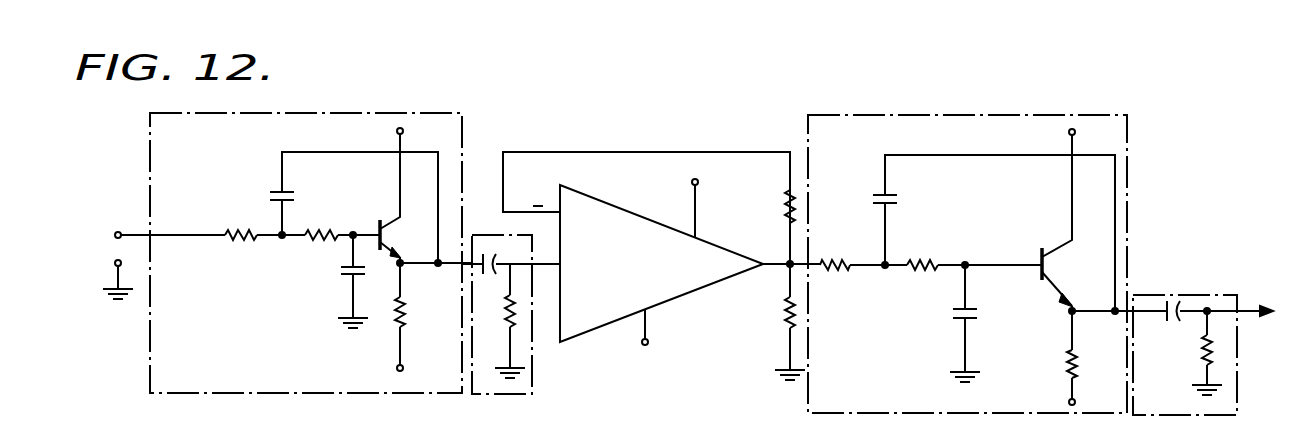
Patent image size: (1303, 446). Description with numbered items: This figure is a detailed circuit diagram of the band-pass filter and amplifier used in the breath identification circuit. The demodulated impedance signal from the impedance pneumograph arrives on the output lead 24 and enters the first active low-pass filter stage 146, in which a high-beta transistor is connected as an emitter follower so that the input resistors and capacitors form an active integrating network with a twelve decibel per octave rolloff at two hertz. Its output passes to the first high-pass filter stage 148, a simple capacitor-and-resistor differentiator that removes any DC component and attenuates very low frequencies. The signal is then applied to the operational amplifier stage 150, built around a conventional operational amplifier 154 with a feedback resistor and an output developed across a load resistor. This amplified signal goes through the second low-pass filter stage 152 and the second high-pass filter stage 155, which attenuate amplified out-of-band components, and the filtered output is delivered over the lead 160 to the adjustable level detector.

The output lead 24 is at (130, 235).
The first active low-pass filter stage 146 is at (350, 113).
The first high-pass filter stage 148 is at (532, 377).
The operational amplifier stage 150 is at (661, 144).
The second low-pass filter stage 152 is at (917, 115).
The operational amplifier 154 is at (680, 298).
The second high-pass filter stage 155 is at (1223, 295).
The lead 160 is at (1266, 293).